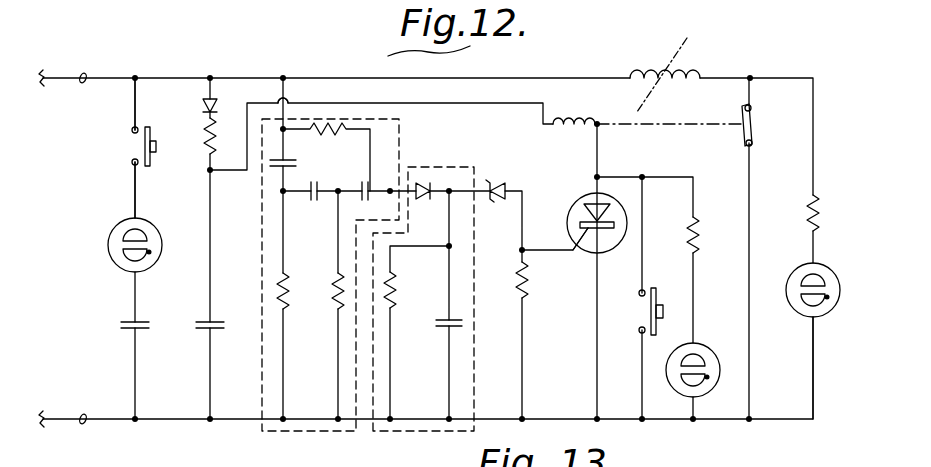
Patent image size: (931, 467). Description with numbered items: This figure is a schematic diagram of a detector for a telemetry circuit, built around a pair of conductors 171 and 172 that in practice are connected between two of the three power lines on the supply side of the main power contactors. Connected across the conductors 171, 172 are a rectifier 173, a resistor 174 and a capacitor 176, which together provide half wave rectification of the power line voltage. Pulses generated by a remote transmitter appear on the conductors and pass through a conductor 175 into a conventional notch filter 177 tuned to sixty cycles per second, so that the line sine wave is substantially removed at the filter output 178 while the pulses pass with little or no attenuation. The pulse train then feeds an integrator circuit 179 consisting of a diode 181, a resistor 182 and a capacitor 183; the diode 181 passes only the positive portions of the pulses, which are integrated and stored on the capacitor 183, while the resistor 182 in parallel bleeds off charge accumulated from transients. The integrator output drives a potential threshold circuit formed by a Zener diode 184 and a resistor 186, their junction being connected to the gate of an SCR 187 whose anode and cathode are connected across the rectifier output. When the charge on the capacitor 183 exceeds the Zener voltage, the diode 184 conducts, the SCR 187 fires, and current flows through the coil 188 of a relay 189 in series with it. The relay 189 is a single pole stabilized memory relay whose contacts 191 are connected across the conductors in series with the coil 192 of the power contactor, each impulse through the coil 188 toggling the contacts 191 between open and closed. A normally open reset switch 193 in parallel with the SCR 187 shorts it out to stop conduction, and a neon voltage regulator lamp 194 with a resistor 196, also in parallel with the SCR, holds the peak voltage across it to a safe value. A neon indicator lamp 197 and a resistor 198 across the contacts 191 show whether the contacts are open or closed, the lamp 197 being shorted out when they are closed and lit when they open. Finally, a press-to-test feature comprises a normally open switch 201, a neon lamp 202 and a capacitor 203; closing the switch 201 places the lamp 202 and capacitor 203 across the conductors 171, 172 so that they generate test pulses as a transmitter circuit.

The conductor 171 is at (86, 72).
The conductor 172 is at (86, 413).
The rectifier 173 is at (203, 105).
The resistor 174 is at (207, 145).
The conductor 175 is at (283, 80).
The capacitor 176 is at (190, 326).
The notch filter 177 is at (264, 440).
The output of the filter 178 is at (390, 189).
The integrator circuit 179 is at (402, 441).
The diode 181 is at (421, 186).
The resistor 182 is at (412, 296).
The capacitor 183 is at (437, 322).
The Zener diode 184 is at (500, 190).
The resistor 186 is at (528, 290).
The SCR 187 is at (582, 200).
The coil 188 is at (572, 121).
The relay 189 is at (778, 124).
The contacts 191 is at (744, 136).
The coil 192 is at (692, 67).
The reset switch 193 is at (636, 322).
The neon voltage regulator lamp 194 is at (725, 335).
The resistor 196 is at (698, 236).
The neon indicator lamp 197 is at (827, 310).
The resistor 198 is at (820, 215).
The switch 201 is at (128, 148).
The neon lamp 202 is at (110, 236).
The capacitor 203 is at (119, 326).